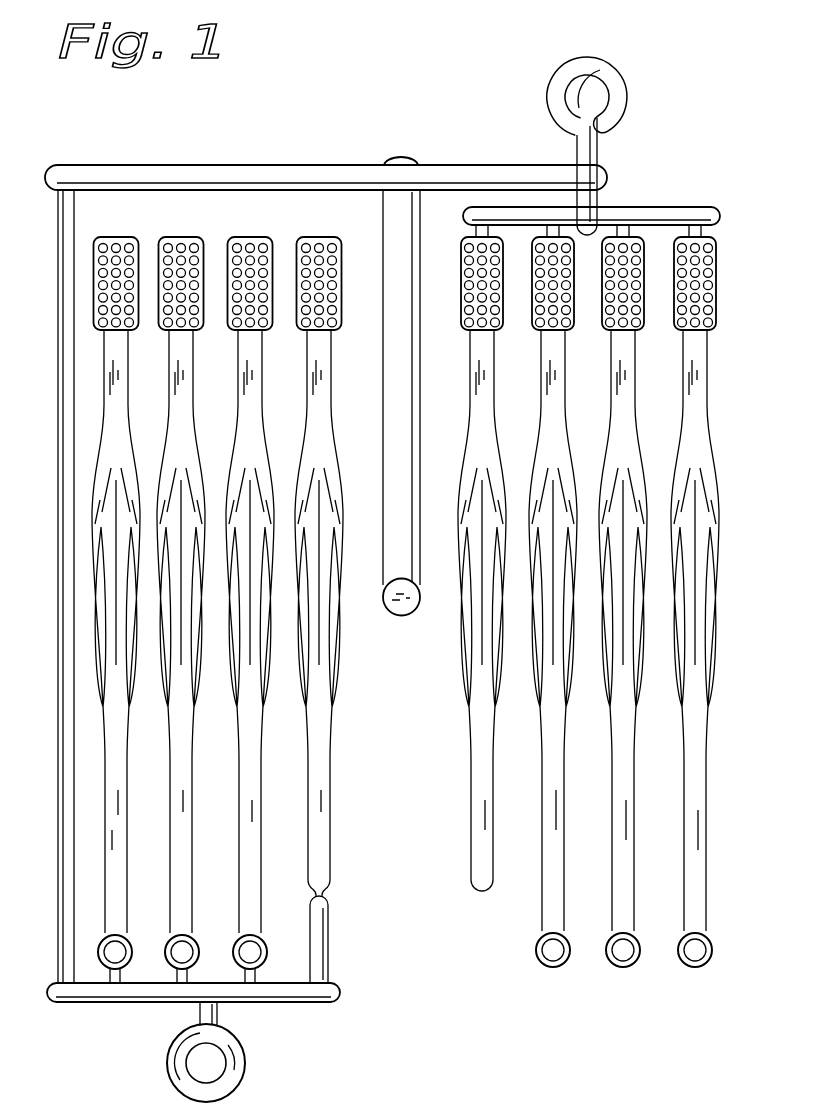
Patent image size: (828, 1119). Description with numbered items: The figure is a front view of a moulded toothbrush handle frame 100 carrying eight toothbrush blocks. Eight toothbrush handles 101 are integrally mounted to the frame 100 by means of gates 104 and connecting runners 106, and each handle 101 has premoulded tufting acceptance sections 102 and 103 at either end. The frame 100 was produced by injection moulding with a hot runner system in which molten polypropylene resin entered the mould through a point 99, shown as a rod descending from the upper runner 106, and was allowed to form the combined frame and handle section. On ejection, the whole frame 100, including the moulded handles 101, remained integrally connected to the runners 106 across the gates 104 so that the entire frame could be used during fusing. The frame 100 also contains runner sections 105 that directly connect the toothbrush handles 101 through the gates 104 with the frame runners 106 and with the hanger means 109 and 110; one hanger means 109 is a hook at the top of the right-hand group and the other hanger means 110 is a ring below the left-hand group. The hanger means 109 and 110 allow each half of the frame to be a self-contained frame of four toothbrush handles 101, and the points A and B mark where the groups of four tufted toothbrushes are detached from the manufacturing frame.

The moulded toothbrush handle frame 100 is at (392, 153).
The point 99 is at (401, 616).
The toothbrush handle 101 is at (322, 771).
The premoulded tufting acceptance section 102 is at (331, 284).
The premoulded tufting acceptance section 103 is at (186, 950).
The gate 104 is at (640, 222).
The runner section 105 is at (620, 206).
The connecting runner 106 is at (441, 174).
The hanger means 109 is at (612, 87).
The hanger means 110 is at (234, 1077).
The point A is at (87, 975).
The point B is at (565, 196).